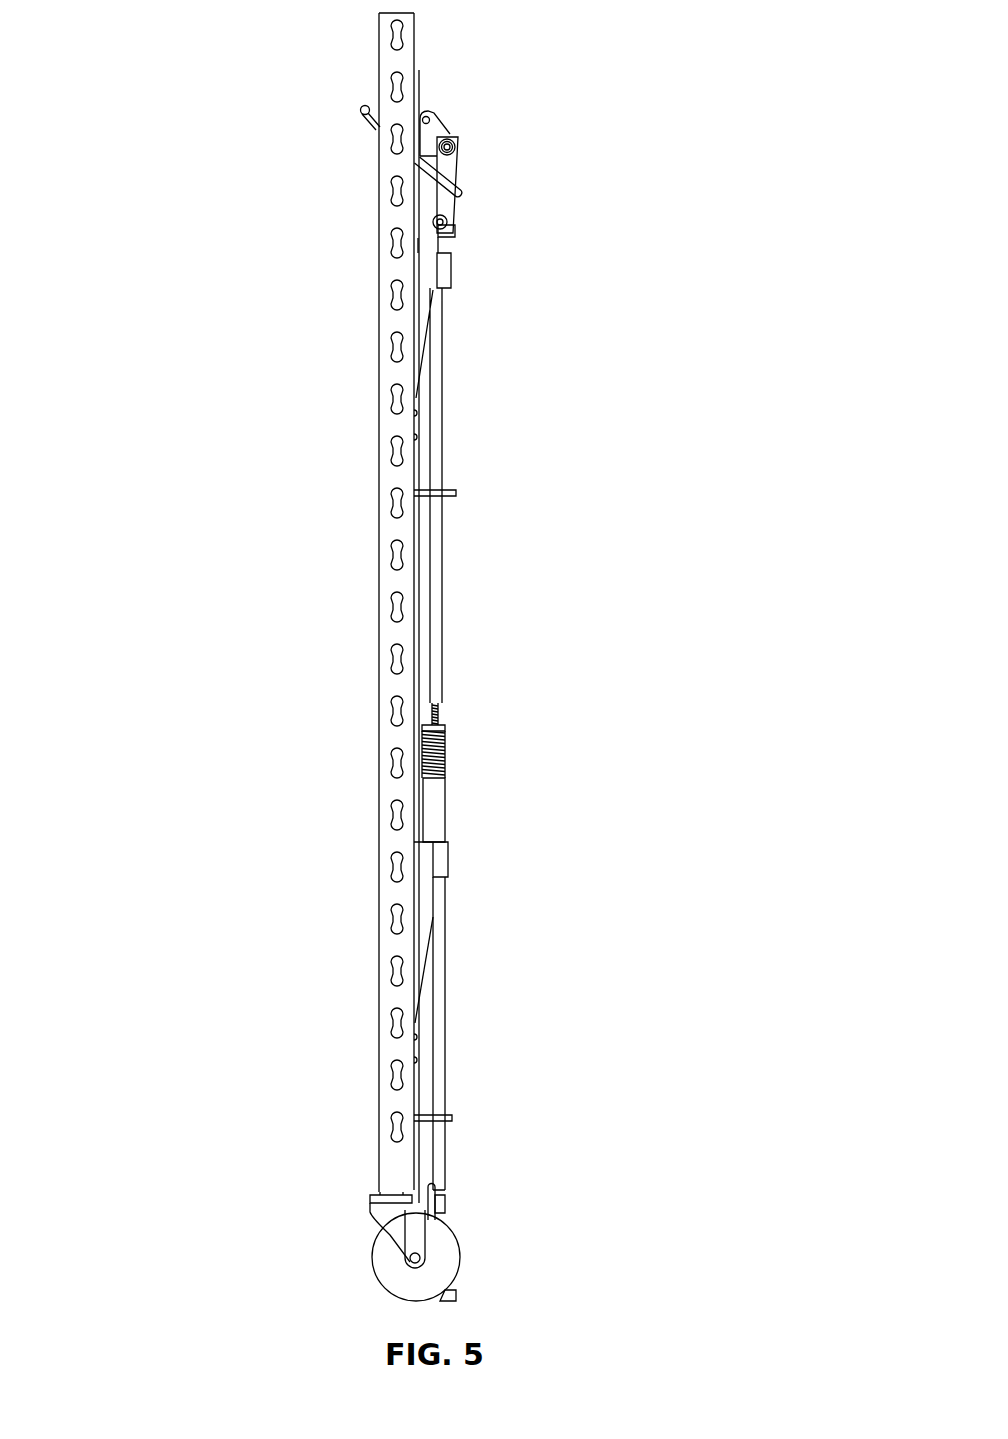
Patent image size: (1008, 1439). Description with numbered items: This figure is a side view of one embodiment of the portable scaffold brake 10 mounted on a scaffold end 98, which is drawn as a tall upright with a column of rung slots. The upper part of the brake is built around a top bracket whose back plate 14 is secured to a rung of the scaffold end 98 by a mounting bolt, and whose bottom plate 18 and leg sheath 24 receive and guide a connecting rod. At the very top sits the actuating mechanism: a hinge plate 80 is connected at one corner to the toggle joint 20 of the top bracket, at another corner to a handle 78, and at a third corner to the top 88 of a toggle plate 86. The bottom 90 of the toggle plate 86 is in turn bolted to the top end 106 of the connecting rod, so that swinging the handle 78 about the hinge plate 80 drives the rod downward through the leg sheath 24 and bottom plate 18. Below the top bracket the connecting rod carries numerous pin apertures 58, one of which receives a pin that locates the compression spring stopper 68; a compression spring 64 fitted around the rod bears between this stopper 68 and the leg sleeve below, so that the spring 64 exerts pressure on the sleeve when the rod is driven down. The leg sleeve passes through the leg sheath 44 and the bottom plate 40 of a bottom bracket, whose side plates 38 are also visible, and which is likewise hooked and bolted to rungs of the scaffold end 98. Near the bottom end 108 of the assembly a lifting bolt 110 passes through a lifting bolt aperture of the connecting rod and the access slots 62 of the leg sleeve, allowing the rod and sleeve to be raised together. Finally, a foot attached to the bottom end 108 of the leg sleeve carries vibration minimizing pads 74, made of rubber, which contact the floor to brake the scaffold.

The portable scaffold brake 10 is at (642, 568).
The scaffold end 98 is at (375, 583).
The handle 78 is at (356, 119).
The toggle joint 20 is at (432, 118).
The hinge plate 80 is at (452, 137).
The top of toggle plate 88 is at (448, 150).
The toggle plate 86 is at (460, 178).
The bottom of toggle plate 90 is at (456, 229).
The back plate 14 is at (420, 247).
The top end of connecting rod 106 is at (437, 244).
The leg sheath 24 is at (448, 274).
The bottom plate 18 is at (456, 493).
The pin apertures 58 is at (438, 704).
The compression spring stopper 68 is at (446, 726).
The compression spring 64 is at (423, 754).
The leg sheath 44 is at (441, 862).
The side plates 38 is at (421, 905).
The bottom plate 40 is at (455, 1118).
The bottom end 108 is at (428, 1193).
The lifting bolt 110 is at (437, 1184).
The access slots 62 is at (447, 1209).
The vibration minimizing pads 74 is at (458, 1296).